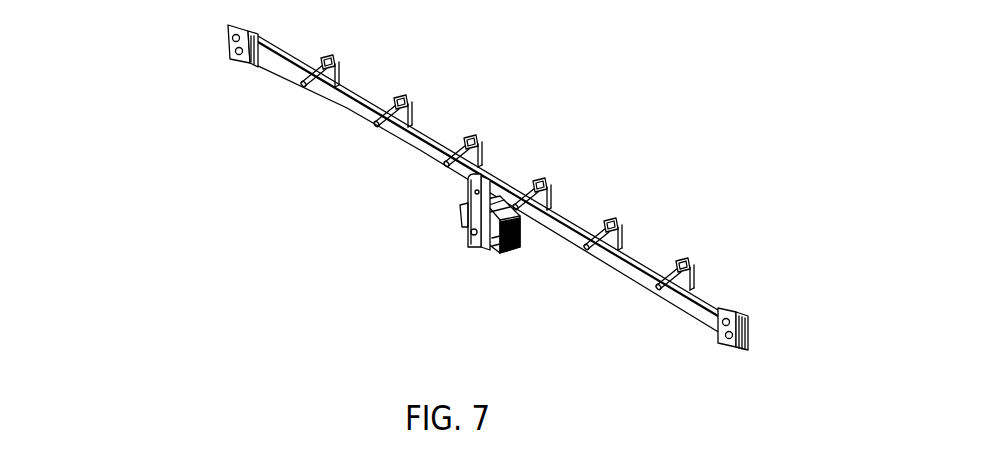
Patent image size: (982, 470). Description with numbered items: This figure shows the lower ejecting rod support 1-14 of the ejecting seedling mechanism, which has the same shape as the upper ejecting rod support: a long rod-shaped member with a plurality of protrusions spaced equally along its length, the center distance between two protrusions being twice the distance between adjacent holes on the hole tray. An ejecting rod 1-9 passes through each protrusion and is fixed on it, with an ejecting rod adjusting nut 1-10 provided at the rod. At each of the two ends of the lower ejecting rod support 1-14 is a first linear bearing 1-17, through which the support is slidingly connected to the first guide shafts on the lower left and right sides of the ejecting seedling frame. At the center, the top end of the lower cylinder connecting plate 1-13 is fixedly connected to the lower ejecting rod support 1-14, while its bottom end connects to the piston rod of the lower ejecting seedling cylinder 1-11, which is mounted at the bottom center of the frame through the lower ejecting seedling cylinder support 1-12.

The ejecting rod 1-9 is at (497, 145).
The ejecting rod adjusting nut 1-10 is at (561, 112).
The lower ejecting seedling cylinder 1-11 is at (569, 289).
The lower ejecting seedling cylinder support 1-12 is at (418, 269).
The lower cylinder connecting plate 1-13 is at (335, 219).
The lower ejecting rod support 1-14 is at (422, 184).
The first linear bearing 1-17 is at (447, 187).